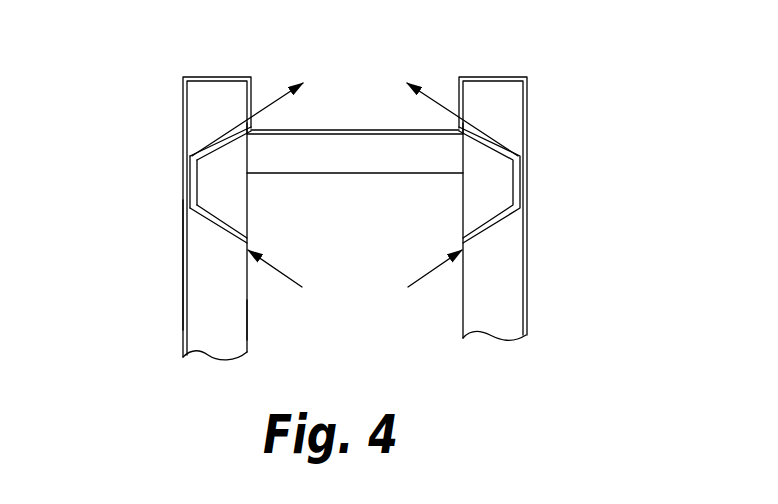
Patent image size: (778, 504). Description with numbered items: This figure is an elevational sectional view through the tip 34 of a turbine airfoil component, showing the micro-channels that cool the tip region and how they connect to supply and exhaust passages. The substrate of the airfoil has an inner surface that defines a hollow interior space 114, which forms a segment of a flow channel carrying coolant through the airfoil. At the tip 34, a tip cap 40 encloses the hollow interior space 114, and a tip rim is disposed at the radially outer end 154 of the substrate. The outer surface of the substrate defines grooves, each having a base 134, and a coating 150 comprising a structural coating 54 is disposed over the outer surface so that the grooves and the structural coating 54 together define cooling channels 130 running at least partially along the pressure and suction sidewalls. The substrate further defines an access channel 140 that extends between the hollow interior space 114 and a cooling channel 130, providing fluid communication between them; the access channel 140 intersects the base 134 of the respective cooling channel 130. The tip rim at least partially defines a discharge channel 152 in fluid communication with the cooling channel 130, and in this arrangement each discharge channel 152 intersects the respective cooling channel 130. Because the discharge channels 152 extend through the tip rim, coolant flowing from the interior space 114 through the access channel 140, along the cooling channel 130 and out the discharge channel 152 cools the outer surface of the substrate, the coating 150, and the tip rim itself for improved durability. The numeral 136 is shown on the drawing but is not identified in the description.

The tip 34 is at (541, 70).
The tip cap 40 is at (353, 131).
The hollow interior space 114 is at (272, 302).
The cooling channel 130 is at (193, 176).
The base 134 is at (206, 188).
The first plate 136 is at (207, 90).
The access channel 140 is at (218, 218).
The coating 150 is at (123, 265).
The structural coating 54 is at (188, 268).
The discharge channel 152 is at (212, 140).
The radially outer end 154 is at (473, 130).